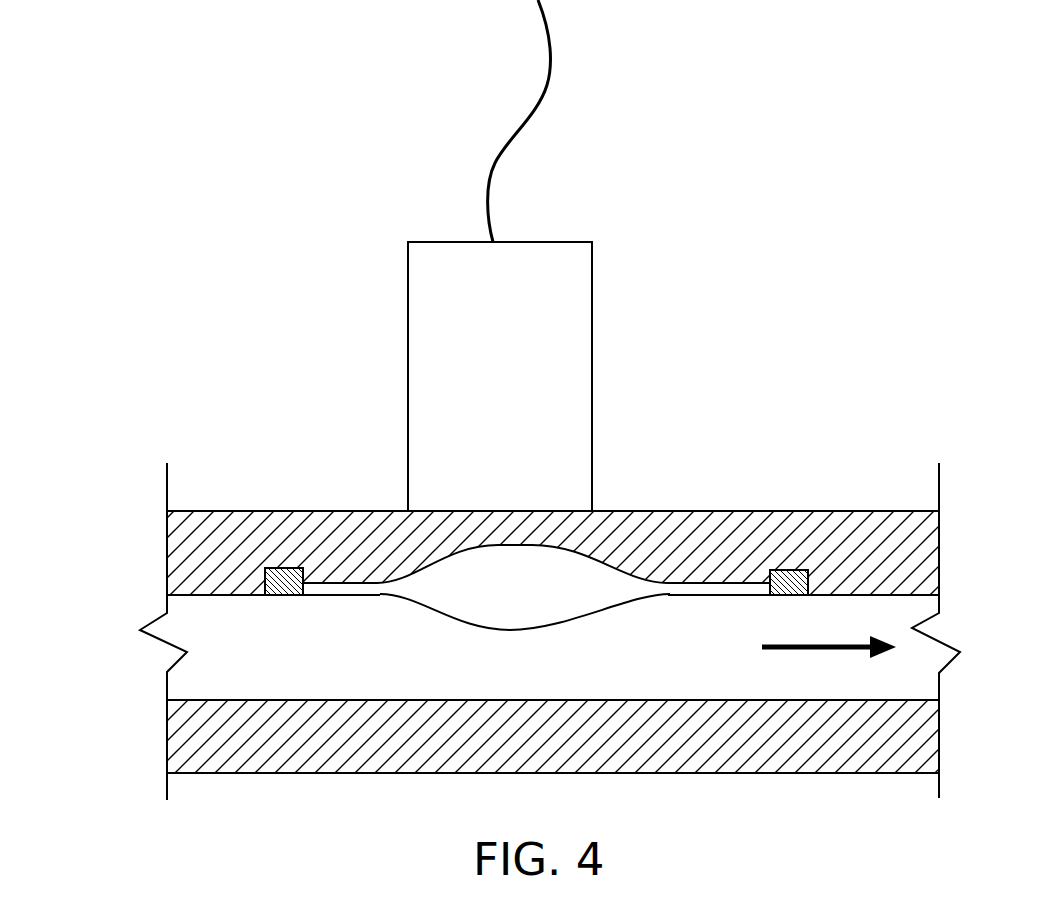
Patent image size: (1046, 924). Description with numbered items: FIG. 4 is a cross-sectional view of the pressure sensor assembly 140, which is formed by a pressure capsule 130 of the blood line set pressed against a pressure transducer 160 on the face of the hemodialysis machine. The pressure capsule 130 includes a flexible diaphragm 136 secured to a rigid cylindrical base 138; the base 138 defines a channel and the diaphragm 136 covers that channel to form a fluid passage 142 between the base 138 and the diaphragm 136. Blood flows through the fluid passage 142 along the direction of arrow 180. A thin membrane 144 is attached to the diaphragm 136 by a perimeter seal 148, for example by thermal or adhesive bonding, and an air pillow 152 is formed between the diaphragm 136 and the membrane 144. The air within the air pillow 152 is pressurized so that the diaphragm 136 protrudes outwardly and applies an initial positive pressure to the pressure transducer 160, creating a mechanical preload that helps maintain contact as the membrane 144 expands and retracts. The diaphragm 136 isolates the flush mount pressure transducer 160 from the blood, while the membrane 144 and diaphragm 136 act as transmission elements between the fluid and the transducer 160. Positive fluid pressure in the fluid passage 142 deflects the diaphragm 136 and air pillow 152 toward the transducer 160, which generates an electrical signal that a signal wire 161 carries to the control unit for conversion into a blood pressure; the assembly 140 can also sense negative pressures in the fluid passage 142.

The pressure capsule 130 is at (501, 641).
The flexible diaphragm 136 is at (900, 503).
The rigid cylindrical base 138 is at (332, 752).
The pressure sensor assembly 140 is at (482, 321).
The fluid passage 142 is at (228, 661).
The membrane 144 is at (318, 610).
The perimeter seal 148 is at (793, 573).
The air pillow 152 is at (403, 576).
The pressure transducer 160 is at (592, 337).
The signal wire 161 is at (550, 67).
The arrow 180 is at (843, 653).